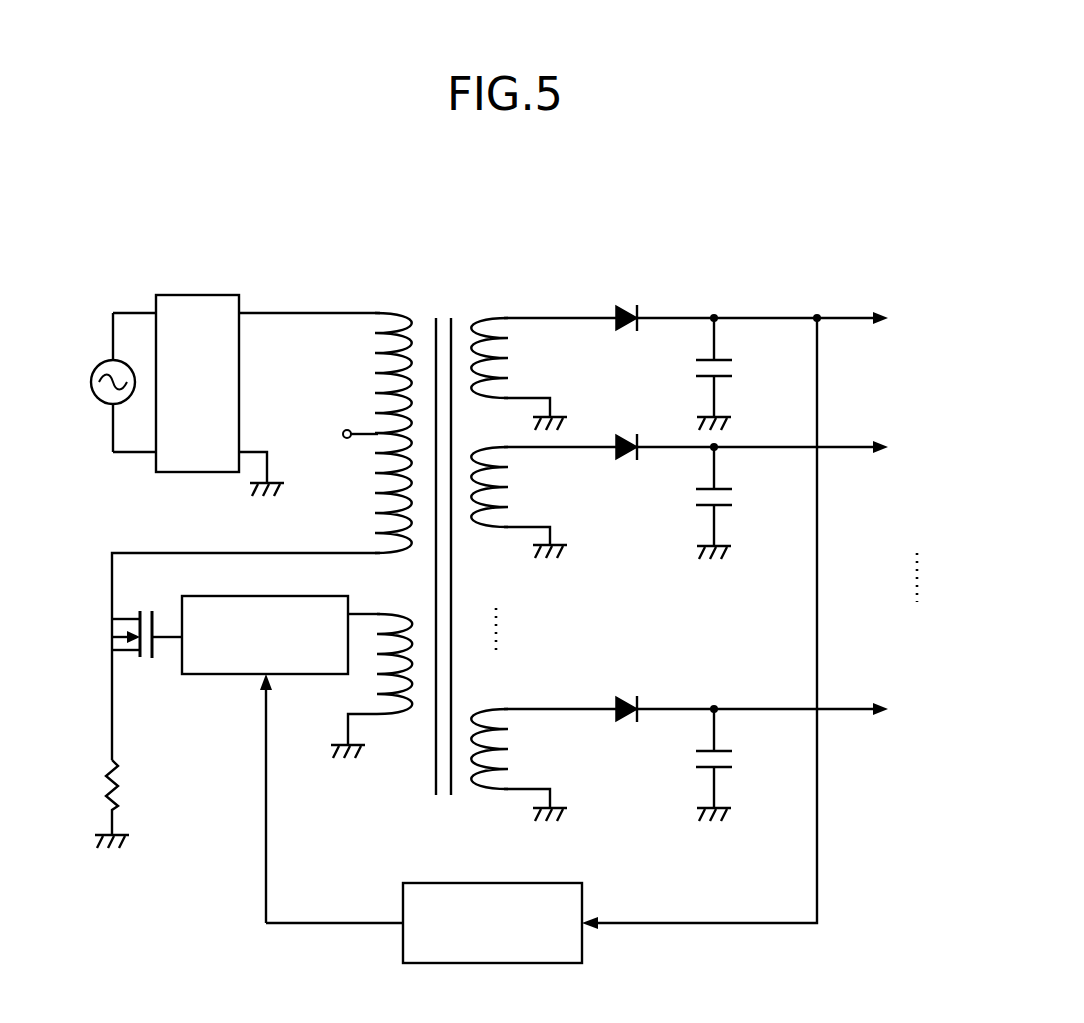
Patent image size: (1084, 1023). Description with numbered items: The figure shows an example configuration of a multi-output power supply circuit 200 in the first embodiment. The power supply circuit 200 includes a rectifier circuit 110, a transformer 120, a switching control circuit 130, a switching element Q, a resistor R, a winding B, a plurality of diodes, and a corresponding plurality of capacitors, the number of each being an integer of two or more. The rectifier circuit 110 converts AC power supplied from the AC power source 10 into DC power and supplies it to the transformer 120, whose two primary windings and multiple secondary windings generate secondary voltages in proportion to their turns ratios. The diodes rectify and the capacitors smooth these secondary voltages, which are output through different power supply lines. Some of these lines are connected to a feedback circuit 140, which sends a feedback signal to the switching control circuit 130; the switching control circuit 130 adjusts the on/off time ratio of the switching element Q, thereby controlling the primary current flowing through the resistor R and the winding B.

The AC power source 10 is at (100, 402).
The rectifier circuit 110 is at (206, 296).
The transformer 120 is at (462, 318).
The switching control circuit 130 is at (290, 596).
The feedback circuit 140 is at (520, 884).
The power supply circuit 200 is at (764, 232).